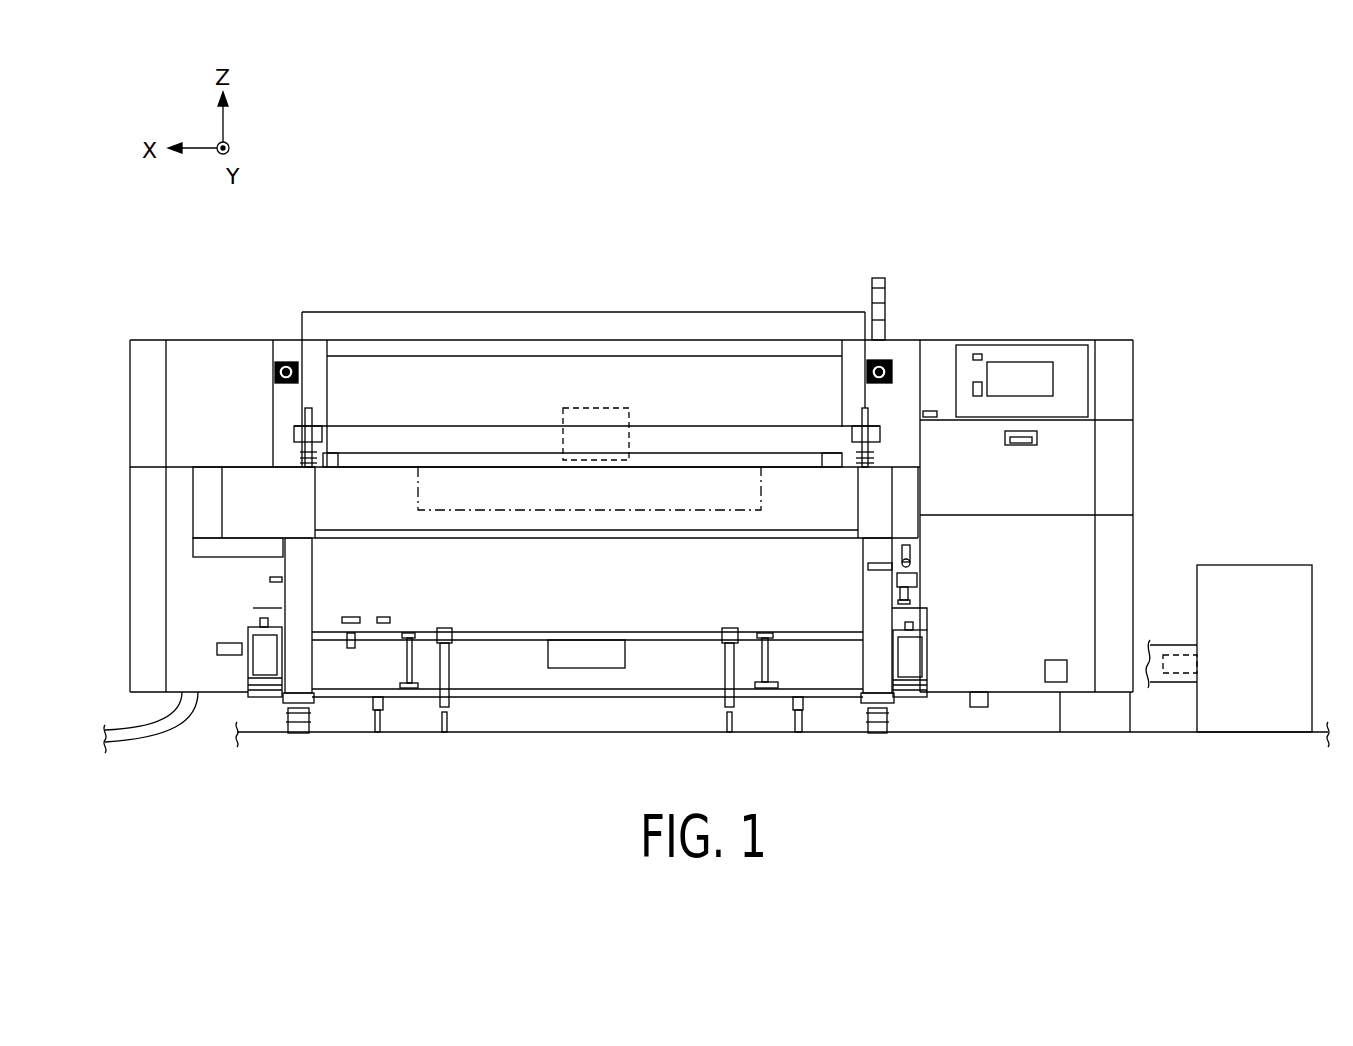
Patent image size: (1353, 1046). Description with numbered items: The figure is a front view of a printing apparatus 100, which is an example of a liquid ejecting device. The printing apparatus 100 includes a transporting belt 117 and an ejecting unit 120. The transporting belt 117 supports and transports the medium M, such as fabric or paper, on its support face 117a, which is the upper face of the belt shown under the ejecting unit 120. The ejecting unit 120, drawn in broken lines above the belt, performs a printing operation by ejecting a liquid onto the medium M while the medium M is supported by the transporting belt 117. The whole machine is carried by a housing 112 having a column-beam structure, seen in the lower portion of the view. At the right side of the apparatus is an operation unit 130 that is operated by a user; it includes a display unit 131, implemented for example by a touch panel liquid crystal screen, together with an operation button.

The printing apparatus 100 is at (1068, 335).
The housing 112 is at (278, 600).
The transporting belt 117 is at (790, 485).
The support face 117a is at (543, 460).
The ejecting unit 120 is at (595, 408).
The operation unit 130 is at (1086, 380).
The display unit 131 is at (1005, 372).
The medium M is at (418, 490).